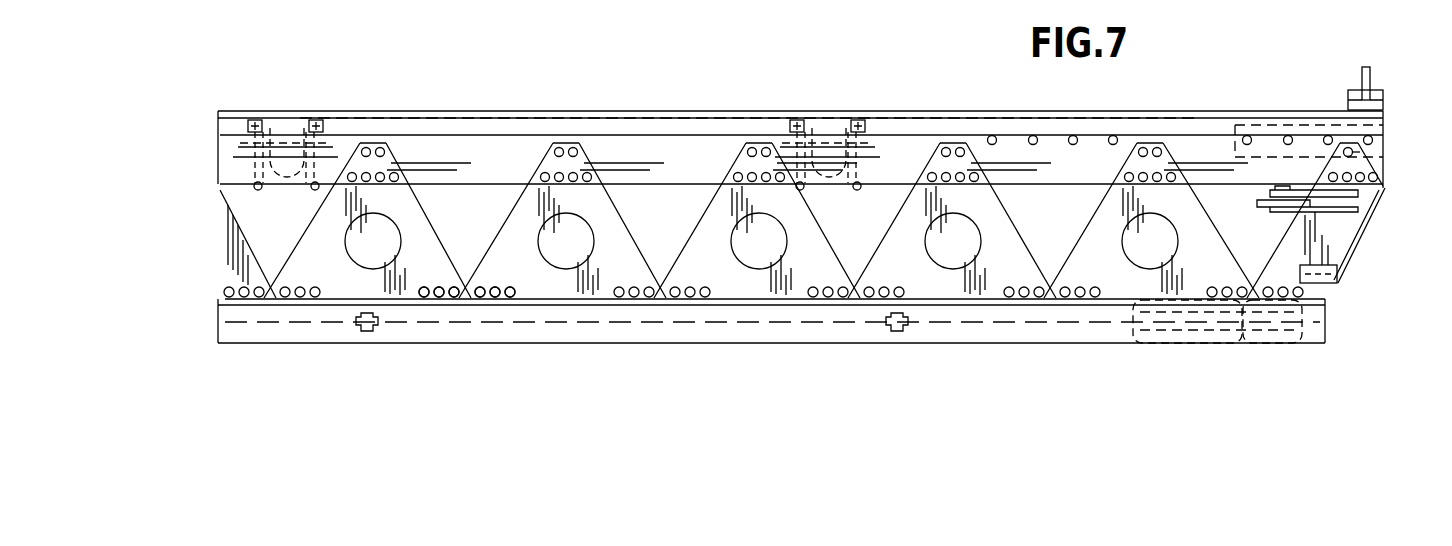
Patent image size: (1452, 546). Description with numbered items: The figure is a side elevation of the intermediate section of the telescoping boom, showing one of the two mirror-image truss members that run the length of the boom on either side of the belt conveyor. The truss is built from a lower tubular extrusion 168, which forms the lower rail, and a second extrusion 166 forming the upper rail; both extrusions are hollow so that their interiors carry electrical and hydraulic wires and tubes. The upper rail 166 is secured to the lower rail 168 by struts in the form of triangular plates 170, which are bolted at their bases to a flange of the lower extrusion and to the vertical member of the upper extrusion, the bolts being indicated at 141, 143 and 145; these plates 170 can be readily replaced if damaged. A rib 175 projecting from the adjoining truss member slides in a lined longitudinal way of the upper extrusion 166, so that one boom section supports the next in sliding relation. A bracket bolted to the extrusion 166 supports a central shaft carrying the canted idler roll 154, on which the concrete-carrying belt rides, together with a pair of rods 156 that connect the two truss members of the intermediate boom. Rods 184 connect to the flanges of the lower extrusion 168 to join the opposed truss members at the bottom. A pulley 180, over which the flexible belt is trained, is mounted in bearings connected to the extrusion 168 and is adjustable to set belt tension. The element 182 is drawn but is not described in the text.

The bolt 141 is at (595, 148).
The bolt 143 is at (441, 297).
The bolt 145 is at (572, 147).
The idler roll 154 is at (830, 128).
The rod 156 is at (253, 162).
The upper extrusion 166 is at (462, 117).
The lower tubular extrusion 168 is at (580, 332).
The triangular plate 170 is at (1097, 242).
The rib 175 is at (307, 123).
The pulley 180 is at (1302, 313).
The end stop 182 is at (1350, 95).
The rod 184 is at (903, 330).